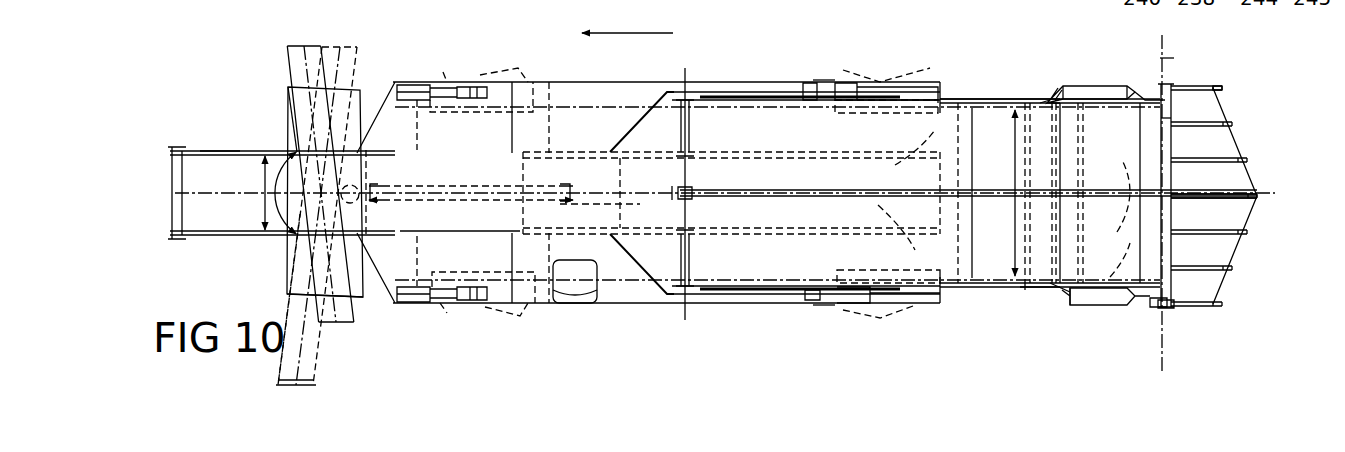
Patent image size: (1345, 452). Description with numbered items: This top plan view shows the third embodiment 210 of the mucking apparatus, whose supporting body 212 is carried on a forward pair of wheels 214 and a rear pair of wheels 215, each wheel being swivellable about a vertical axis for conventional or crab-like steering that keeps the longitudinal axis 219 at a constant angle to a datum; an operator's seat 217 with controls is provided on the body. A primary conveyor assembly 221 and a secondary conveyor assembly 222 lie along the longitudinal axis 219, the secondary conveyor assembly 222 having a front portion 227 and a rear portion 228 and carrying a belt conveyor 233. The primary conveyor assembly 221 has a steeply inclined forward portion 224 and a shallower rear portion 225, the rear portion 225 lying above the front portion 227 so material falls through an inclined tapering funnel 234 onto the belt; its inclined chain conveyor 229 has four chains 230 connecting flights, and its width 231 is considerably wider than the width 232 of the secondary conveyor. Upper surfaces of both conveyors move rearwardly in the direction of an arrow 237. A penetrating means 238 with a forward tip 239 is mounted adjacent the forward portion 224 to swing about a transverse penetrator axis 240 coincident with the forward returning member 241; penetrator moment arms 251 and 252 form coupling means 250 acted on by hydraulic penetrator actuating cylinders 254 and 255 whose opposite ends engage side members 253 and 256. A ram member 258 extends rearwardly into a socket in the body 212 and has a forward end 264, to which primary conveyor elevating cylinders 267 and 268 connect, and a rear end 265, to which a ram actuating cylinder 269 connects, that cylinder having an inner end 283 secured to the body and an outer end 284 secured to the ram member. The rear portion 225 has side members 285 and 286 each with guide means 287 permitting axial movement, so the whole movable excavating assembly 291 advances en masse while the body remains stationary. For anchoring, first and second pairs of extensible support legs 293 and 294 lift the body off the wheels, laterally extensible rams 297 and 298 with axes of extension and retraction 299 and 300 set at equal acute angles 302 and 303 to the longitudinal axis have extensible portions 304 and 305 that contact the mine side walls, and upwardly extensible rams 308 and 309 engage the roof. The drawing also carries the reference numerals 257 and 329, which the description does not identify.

The third embodiment 210 is at (806, 54).
The supporting body 212 is at (698, 335).
The forward pair of wheels 214 is at (929, 80).
The rear pair of wheels 215 is at (524, 86).
The operator's seat 217 is at (565, 283).
The longitudinal axis 219 is at (622, 190).
The primary conveyor assembly 221 is at (1015, 60).
The secondary conveyor assembly 222 is at (245, 245).
The forward portion 224 is at (1150, 117).
The rear portion 225 is at (708, 128).
The front portion 227 is at (806, 275).
The rear portion 228 is at (217, 150).
The inclined chain conveyor 229 is at (1155, 175).
The chains 230 is at (1090, 114).
The width of chain conveyor 231 is at (1016, 146).
The width of secondary conveyor assembly 232 is at (262, 185).
The belt conveyor 233 is at (490, 224).
The inclined tapering funnel 234 is at (645, 122).
The arrow 237 is at (618, 34).
The penetrating means 238 is at (1255, 135).
The forward tip 239 is at (1258, 197).
The transverse penetrator axis 240 is at (1166, 58).
The forward returning member 241 is at (1214, 88).
The coupling means 250 is at (1157, 190).
The penetrator moment arm 251 is at (1172, 305).
The penetrator moment arm 252 is at (1166, 118).
The side member 253 is at (1062, 293).
The hydraulic penetrator actuating cylinder 254 is at (1084, 307).
The hydraulic penetrator actuating cylinder 255 is at (1065, 87).
The side member 256 is at (1067, 83).
The pivot axis 257 is at (1067, 70).
The ram member 258 is at (803, 152).
The forward end 264 is at (1030, 193).
The rear end 265 is at (585, 203).
The primary conveyor elevating cylinder 267 is at (1030, 290).
The primary conveyor elevating cylinder 268 is at (1052, 106).
The ram actuating cylinder 269 is at (560, 190).
The inner end 283 is at (382, 182).
The outer end 284 is at (731, 193).
The side member 285 is at (712, 297).
The side member 286 is at (839, 65).
The guide means 287 is at (740, 93).
The movable excavating assembly 291 is at (1062, 62).
The first pair of extensible support legs 293 is at (815, 80).
The second pair of extensible support legs 294 is at (812, 307).
The laterally extensible ram 297 is at (300, 282).
The laterally extensible ram 298 is at (293, 109).
The axis of extension and retraction 299 is at (305, 330).
The axis of extension and retraction 300 is at (297, 46).
The acute angle 302 is at (292, 246).
The acute angle 303 is at (283, 150).
The extensible portion 304 is at (313, 371).
The extensible portion 305 is at (288, 69).
The upwardly extensible ram 308 is at (455, 308).
The upwardly extensible ram 309 is at (463, 82).
The drive shaft 329 is at (893, 163).